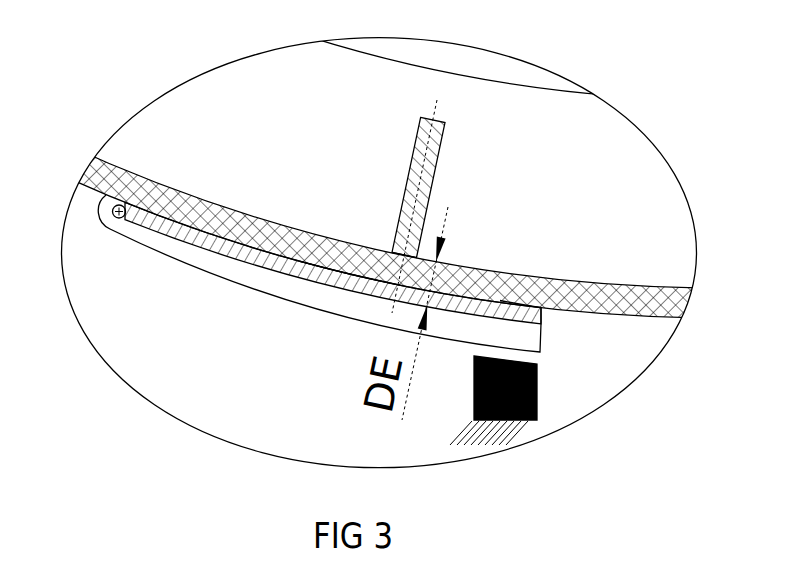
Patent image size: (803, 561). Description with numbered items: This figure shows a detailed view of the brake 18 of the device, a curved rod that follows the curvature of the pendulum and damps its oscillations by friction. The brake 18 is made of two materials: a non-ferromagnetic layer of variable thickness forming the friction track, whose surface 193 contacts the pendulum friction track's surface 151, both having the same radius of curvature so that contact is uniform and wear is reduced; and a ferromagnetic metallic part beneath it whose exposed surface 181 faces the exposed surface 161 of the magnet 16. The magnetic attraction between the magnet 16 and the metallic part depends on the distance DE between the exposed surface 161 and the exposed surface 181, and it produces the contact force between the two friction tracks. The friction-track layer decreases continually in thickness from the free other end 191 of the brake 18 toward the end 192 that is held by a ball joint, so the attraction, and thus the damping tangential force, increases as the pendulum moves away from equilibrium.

The magnet 16 is at (415, 200).
The exposed surface of the magnet 161 is at (358, 204).
The brake 18 is at (218, 261).
The exposed surface of the metallic part of the brake 181 is at (268, 258).
The other end of the brake 191 is at (525, 252).
The end of the brake 192 is at (212, 200).
The surface of the friction track of the brake 193 is at (328, 270).
The surface of the friction track of the pendulum 151 is at (585, 313).